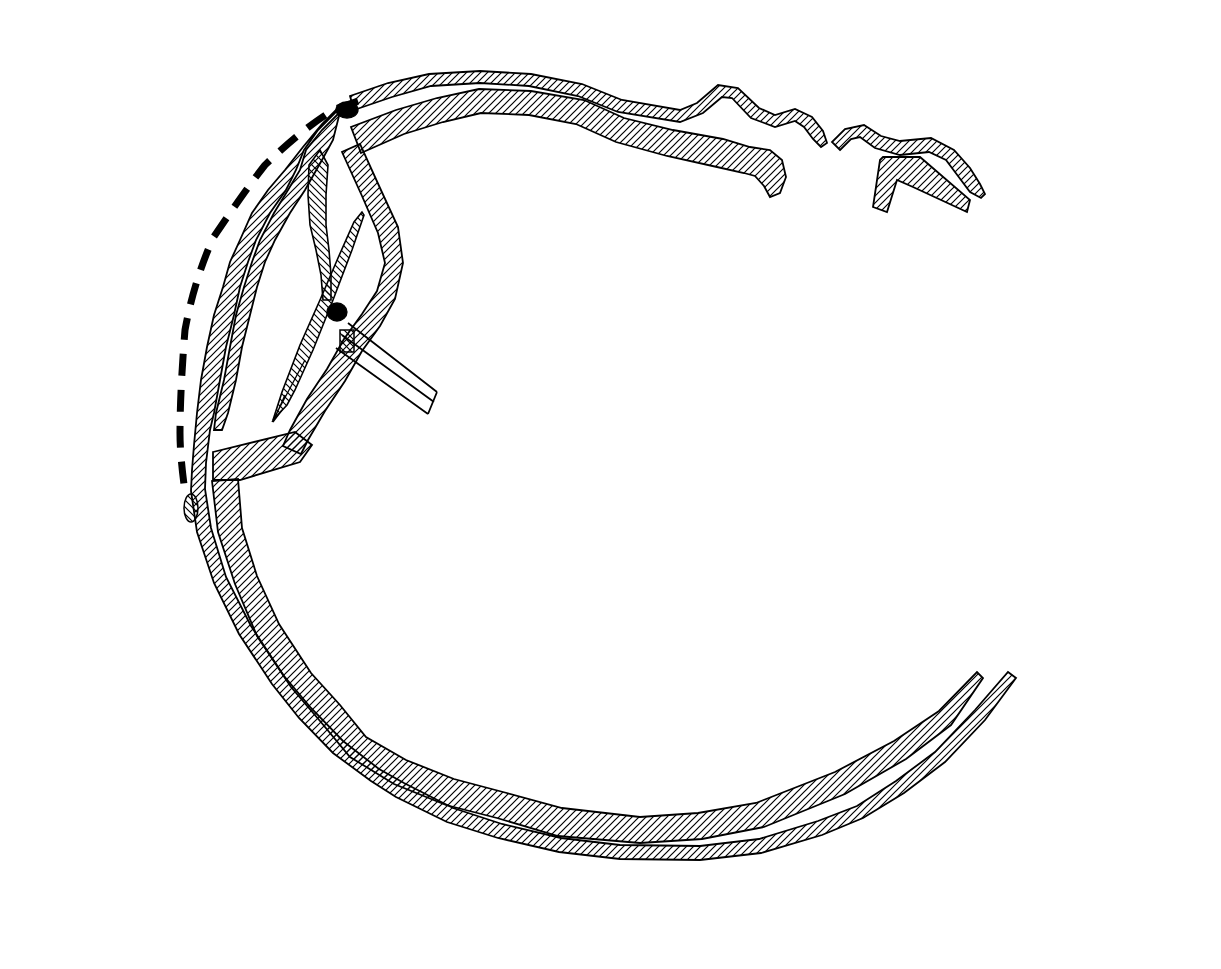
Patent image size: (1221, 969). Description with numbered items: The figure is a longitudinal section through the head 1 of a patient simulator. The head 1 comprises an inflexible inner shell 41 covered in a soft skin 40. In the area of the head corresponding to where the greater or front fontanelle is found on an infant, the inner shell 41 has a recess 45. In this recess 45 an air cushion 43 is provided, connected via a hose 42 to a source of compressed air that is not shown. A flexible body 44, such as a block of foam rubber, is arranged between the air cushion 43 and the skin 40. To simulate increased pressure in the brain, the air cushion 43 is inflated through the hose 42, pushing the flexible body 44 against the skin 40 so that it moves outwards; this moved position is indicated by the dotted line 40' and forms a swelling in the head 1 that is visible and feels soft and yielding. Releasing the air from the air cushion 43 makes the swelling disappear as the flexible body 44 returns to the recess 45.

The head 1 is at (1053, 170).
The soft skin 40 is at (600, 465).
The dotted line 40' is at (269, 269).
The inner shell 41 is at (502, 112).
The hose 42 is at (390, 363).
The air cushion 43 is at (317, 350).
The flexible body 44 is at (307, 303).
The recess 45 is at (385, 273).